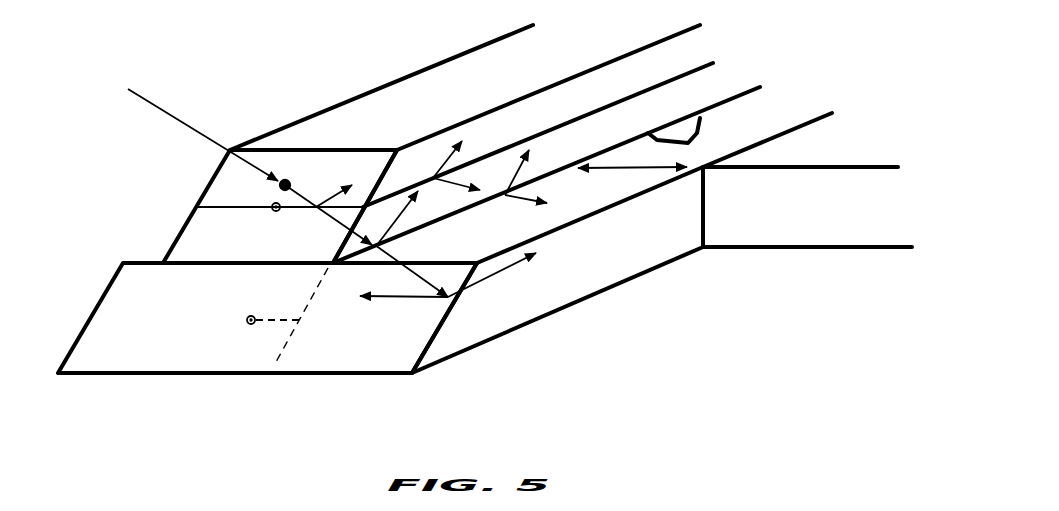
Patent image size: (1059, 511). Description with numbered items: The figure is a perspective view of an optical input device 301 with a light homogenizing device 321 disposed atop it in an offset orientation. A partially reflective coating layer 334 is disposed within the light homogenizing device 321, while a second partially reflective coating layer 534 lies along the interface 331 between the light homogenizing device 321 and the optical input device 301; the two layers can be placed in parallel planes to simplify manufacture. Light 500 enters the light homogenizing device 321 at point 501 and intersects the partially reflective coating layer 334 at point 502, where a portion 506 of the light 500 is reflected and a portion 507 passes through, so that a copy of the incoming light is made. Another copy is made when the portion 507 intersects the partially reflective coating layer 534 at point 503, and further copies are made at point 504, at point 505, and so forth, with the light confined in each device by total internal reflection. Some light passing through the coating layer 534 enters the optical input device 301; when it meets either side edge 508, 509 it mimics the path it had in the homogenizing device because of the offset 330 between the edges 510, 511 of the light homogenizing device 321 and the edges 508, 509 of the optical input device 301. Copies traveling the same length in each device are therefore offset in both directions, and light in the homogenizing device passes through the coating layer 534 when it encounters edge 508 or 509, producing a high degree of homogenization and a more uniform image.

The optical input device 301 is at (560, 312).
The light homogenizing device 321 is at (402, 78).
The offset 330 is at (544, 183).
The interface 331 is at (735, 107).
The partially reflective coating layer 334 is at (578, 118).
The light 500 is at (205, 135).
The point 501 is at (285, 178).
The point 502 is at (315, 209).
The point 503 is at (443, 300).
The point 504 is at (433, 177).
The point 505 is at (503, 198).
The portion of the light 506 is at (333, 189).
The portion of the light 507 is at (333, 218).
The side edge 508 is at (83, 330).
The side edge 509 is at (447, 320).
The edge 510 is at (190, 213).
The edge 511 is at (385, 158).
The partially reflective coating layer 534 is at (685, 128).